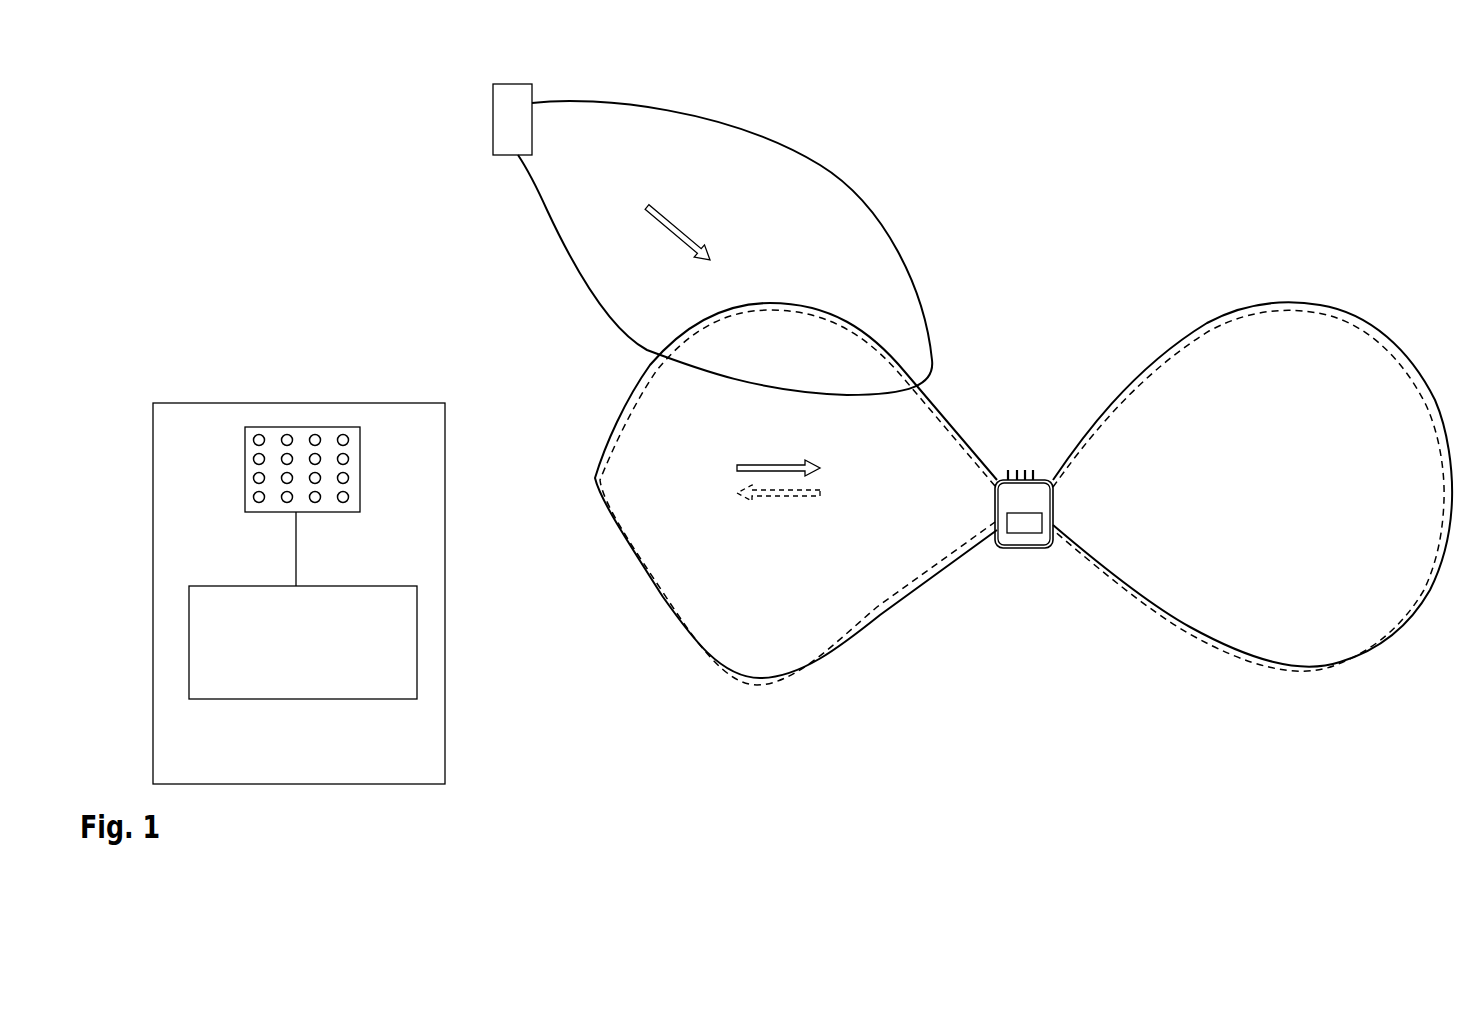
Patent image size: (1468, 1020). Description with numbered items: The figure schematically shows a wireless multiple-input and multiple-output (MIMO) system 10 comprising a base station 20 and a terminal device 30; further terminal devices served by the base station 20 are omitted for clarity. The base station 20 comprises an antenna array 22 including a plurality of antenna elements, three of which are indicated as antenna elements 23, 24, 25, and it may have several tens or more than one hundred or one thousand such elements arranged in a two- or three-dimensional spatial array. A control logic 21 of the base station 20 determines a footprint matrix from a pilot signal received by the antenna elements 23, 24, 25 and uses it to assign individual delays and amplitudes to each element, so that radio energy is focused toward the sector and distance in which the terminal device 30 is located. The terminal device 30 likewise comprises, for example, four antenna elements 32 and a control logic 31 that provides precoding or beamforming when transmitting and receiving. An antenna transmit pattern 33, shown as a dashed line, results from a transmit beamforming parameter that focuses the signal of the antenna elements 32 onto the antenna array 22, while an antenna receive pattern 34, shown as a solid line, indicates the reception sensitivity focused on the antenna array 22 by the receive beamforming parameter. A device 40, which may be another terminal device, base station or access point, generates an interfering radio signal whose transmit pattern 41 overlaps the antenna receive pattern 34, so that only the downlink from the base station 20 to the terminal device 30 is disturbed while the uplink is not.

The wireless multiple-input and multiple-output (MIMO) system 10 is at (190, 124).
The base station 20 is at (149, 682).
The control logic 21 is at (417, 699).
The antenna array 22 is at (301, 486).
The antenna element 23 is at (349, 498).
The antenna element 24 is at (349, 478).
The antenna element 25 is at (349, 458).
The terminal device 30 is at (1025, 504).
The control logic 31 is at (1032, 533).
The antenna elements 32 is at (1013, 468).
The antenna transmit pattern 33 is at (863, 635).
The antenna receive pattern 34 is at (933, 393).
The device 40 is at (490, 118).
The transmit pattern 41 is at (872, 207).